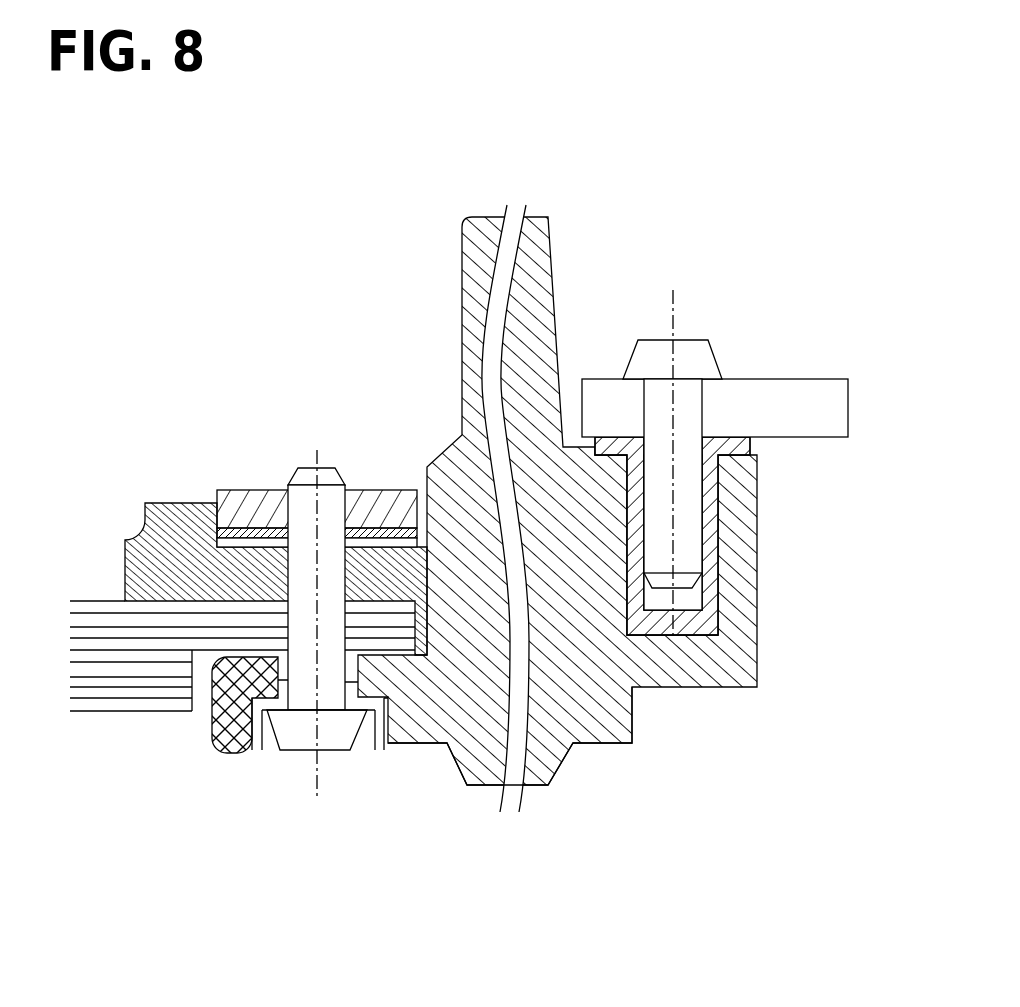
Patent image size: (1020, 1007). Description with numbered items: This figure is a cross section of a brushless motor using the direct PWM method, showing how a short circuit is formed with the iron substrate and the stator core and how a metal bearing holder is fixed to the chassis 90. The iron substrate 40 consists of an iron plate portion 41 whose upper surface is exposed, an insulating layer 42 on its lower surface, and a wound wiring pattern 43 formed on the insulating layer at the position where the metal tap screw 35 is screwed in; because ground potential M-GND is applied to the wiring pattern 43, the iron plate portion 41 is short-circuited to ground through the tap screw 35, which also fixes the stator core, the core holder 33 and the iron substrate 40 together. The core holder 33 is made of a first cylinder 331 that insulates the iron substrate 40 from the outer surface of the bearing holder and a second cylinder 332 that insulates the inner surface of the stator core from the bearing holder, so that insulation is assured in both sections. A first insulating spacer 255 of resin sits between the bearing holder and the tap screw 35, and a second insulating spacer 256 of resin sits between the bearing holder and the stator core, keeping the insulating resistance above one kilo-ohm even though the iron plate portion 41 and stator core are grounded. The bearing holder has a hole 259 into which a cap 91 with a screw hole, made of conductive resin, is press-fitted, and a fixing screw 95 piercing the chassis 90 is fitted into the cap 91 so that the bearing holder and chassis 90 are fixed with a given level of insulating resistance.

The core holder 33 is at (215, 490).
The first cylinder 331 is at (428, 467).
The cylinder 332 is at (433, 655).
The metal tap screw 35 is at (357, 735).
The iron substrate 40 is at (292, 414).
The iron plate portion 41 is at (317, 405).
The insulating layer 42 is at (387, 530).
The wiring pattern 43 is at (317, 457).
The chassis 90 is at (820, 393).
The cap with a screw hole 91 is at (698, 566).
The fixing screw 95 is at (702, 350).
The first insulating spacer 255 is at (258, 748).
The second insulating spacer 256 is at (210, 715).
The hole 259 is at (718, 625).